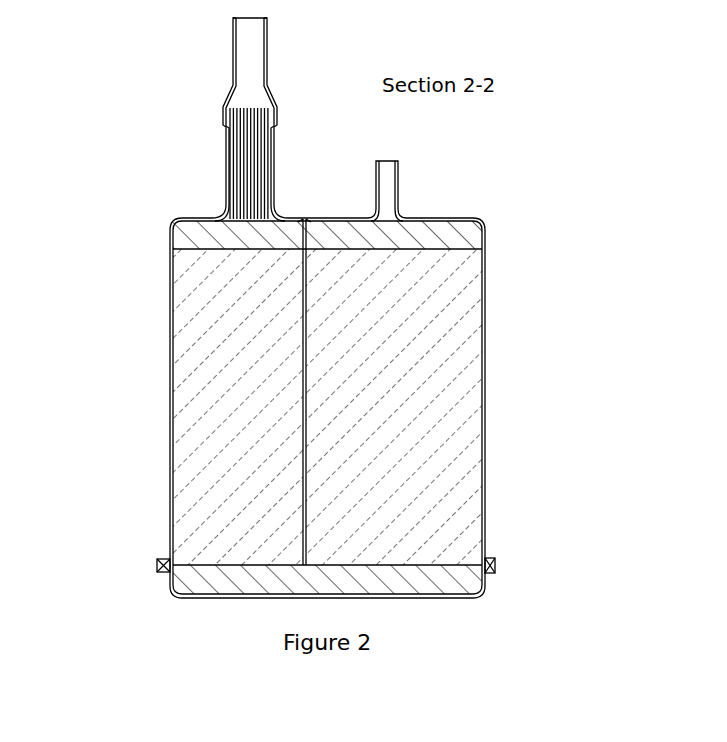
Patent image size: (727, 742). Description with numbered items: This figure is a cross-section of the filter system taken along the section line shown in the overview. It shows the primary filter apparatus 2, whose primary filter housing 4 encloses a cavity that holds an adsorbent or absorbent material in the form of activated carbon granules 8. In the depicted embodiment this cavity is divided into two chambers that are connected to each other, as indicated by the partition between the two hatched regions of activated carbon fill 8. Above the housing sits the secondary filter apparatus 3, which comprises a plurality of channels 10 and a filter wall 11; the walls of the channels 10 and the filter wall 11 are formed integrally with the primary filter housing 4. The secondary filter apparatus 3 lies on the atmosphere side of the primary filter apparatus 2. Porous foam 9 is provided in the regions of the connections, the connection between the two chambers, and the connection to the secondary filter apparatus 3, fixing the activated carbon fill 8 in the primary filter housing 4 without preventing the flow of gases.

The primary filter apparatus 2 is at (166, 376).
The secondary filter apparatus 3 is at (220, 152).
The primary filter housing 4 is at (172, 276).
The activated carbon granules 8 is at (287, 374).
The porous foam 9 is at (465, 236).
The channels 10 is at (240, 156).
The filter wall 11 is at (225, 181).